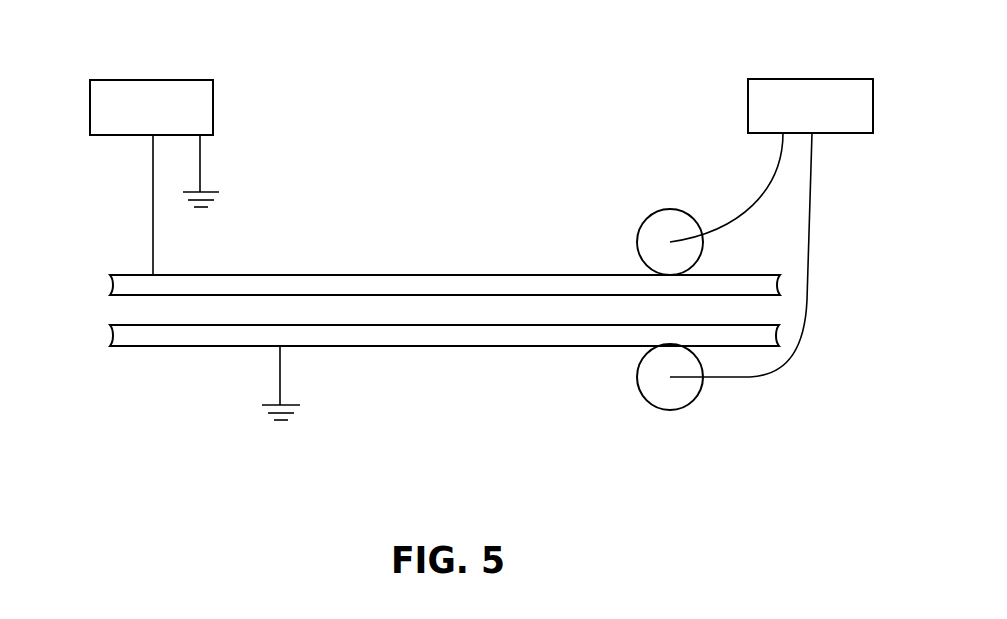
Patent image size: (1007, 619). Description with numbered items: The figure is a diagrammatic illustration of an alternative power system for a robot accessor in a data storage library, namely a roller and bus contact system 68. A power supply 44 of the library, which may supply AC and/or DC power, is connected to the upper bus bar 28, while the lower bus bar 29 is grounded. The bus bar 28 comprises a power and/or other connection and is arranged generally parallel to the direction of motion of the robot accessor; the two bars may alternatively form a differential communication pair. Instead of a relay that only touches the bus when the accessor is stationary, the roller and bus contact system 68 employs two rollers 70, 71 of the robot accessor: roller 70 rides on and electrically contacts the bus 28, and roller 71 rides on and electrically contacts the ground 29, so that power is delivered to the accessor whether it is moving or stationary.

The power supply 44 is at (138, 80).
The bus bar 28 is at (108, 283).
The bus bar 29 is at (108, 341).
The roller and bus contact system 68 is at (783, 79).
The roller 70 is at (660, 212).
The roller 71 is at (662, 408).